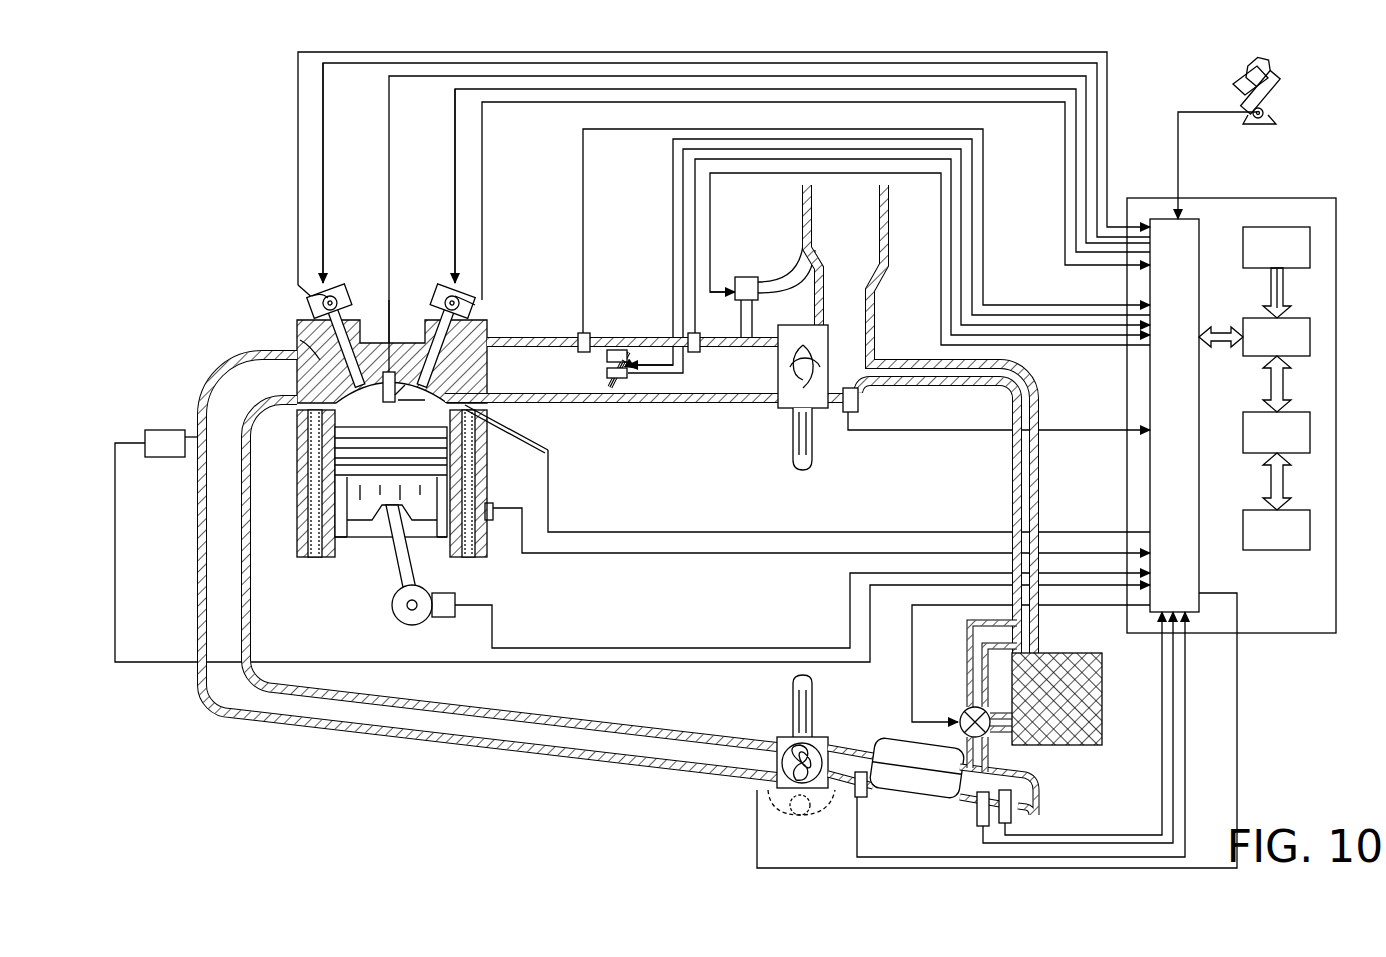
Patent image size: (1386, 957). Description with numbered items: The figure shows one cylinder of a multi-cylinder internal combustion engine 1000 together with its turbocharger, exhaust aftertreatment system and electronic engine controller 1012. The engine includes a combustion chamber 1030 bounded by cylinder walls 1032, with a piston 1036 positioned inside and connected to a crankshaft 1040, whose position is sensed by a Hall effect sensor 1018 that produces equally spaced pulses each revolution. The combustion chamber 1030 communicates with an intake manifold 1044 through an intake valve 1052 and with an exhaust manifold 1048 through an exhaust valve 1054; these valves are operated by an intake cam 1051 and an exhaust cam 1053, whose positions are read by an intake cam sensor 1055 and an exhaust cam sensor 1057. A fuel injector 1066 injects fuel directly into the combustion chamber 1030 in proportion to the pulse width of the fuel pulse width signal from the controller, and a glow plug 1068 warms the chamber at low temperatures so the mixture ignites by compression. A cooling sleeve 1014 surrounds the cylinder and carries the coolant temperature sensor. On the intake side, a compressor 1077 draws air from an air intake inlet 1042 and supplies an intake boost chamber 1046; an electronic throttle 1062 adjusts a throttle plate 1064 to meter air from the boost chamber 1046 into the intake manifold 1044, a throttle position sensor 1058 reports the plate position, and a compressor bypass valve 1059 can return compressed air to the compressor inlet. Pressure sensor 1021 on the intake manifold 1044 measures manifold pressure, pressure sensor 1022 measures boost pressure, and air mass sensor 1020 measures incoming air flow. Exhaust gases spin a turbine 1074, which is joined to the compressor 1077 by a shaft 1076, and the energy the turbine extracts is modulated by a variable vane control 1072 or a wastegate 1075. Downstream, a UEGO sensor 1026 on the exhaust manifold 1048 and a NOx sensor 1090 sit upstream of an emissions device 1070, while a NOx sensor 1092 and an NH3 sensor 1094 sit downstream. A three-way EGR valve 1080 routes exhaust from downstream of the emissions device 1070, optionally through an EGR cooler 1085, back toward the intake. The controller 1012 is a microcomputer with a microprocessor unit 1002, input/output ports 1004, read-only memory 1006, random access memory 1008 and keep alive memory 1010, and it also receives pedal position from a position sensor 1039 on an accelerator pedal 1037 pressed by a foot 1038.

The internal combustion engine 1000 is at (232, 272).
The microprocessor unit 1002 is at (1311, 335).
The input/output ports 1004 is at (1200, 232).
The read-only memory 1006 is at (1311, 248).
The random access memory 1008 is at (1311, 430).
The keep alive memory 1010 is at (1311, 524).
The electronic engine controller 1012 is at (1337, 204).
The cooling sleeve 1014 is at (306, 472).
The Hall effect sensor 1018 is at (445, 618).
The air mass sensor 1020 is at (858, 402).
The pressure sensor 1021 is at (578, 336).
The pressure sensor 1022 is at (700, 338).
The universal exhaust gas oxygen sensor 1026 is at (148, 430).
The combustion chamber 1030 is at (306, 512).
The cylinder walls 1032 is at (340, 548).
The piston 1036 is at (378, 505).
The accelerator pedal 1037 is at (1240, 93).
The foot 1038 is at (1283, 82).
The position sensor 1039 is at (1265, 118).
The crankshaft 1040 is at (400, 622).
The air intake inlet 1042 is at (820, 255).
The intake manifold 1044 is at (527, 383).
The intake boost chamber 1046 is at (700, 383).
The exhaust manifold 1048 is at (257, 388).
The intake cam 1051 is at (452, 292).
The intake valve 1052 is at (425, 382).
The exhaust cam 1053 is at (332, 292).
The exhaust valve 1054 is at (298, 345).
The intake cam sensor 1055 is at (462, 305).
The exhaust cam sensor 1057 is at (315, 298).
The throttle position sensor 1058 is at (632, 378).
The compressor bypass valve 1059 is at (740, 277).
The electronic throttle 1062 is at (608, 350).
The throttle plate 1064 is at (628, 350).
The fuel injector 1066 is at (387, 345).
The glow plug 1068 is at (506, 435).
The emissions device 1070 is at (942, 800).
The variable vane control 1072 is at (775, 770).
The turbine 1074 is at (780, 740).
The wastegate 1075 is at (805, 812).
The shaft 1076 is at (793, 455).
The compressor 1077 is at (778, 405).
The EGR valve 1080 is at (963, 712).
The EGR cooler 1085 is at (1055, 655).
The NOx sensor 1090 is at (862, 798).
The NOx sensor 1092 is at (980, 826).
The NH3 sensor 1094 is at (1012, 820).